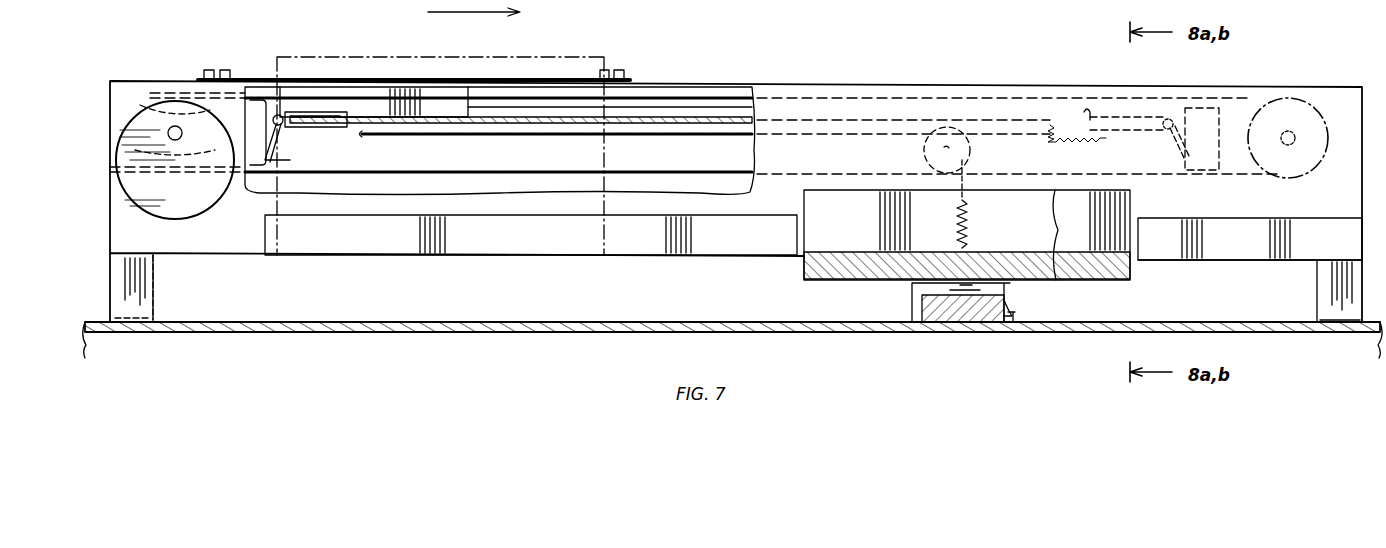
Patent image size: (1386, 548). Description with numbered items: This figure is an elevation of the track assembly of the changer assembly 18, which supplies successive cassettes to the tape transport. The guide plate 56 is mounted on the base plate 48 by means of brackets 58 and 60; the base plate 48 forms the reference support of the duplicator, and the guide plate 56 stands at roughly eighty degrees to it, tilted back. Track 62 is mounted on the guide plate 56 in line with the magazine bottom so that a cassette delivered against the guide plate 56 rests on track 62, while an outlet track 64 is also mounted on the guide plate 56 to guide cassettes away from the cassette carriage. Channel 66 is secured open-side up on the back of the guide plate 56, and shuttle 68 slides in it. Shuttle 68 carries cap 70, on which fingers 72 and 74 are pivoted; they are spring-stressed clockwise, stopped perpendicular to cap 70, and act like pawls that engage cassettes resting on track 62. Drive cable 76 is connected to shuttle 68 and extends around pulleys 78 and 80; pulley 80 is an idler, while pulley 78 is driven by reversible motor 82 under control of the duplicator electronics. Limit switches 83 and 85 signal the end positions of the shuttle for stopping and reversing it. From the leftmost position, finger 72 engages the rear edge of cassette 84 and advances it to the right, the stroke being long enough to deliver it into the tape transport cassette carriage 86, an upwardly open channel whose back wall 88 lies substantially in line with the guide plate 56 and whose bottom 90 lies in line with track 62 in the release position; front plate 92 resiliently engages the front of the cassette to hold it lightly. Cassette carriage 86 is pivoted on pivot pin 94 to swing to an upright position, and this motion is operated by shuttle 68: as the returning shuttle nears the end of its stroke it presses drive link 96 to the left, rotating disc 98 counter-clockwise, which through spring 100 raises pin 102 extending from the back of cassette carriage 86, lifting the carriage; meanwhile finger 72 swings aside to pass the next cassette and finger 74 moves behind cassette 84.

The changer assembly 18 is at (898, 48).
The base plate 48 is at (276, 335).
The guide plate 56 is at (125, 231).
The bracket 58 is at (115, 284).
The bracket 60 is at (1318, 297).
The track 62 is at (530, 248).
The outlet track 64 is at (1258, 252).
The channel 66 is at (684, 118).
The shuttle 68 is at (391, 90).
The cap 70 is at (474, 85).
The finger 72 is at (205, 72).
The finger 74 is at (628, 80).
The drive cable 76 is at (728, 98).
The pulley 78 is at (155, 95).
The idler pulley 80 is at (1290, 108).
The motor 82 is at (118, 162).
The limit switch 83 is at (254, 100).
The cassette 84 is at (553, 42).
The limit switch 85 is at (1200, 108).
The tape transport cassette carriage 86 is at (803, 280).
The back wall 88 is at (857, 240).
The bottom 90 is at (920, 262).
The front plate 92 is at (1076, 250).
The pivot pin 94 is at (1010, 305).
The drive link 96 is at (300, 128).
The disc 98 is at (945, 130).
The spring 100 is at (968, 188).
The pin 102 is at (960, 290).